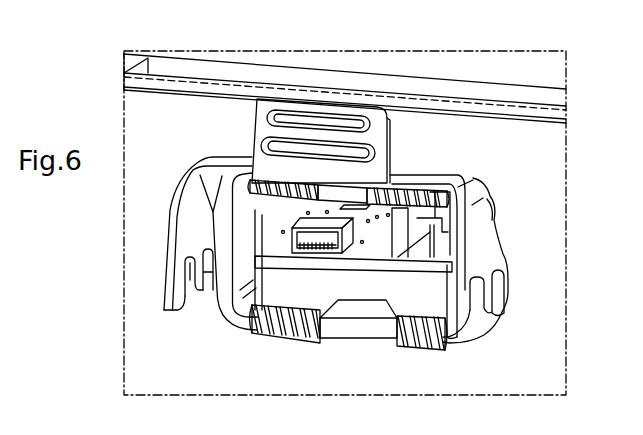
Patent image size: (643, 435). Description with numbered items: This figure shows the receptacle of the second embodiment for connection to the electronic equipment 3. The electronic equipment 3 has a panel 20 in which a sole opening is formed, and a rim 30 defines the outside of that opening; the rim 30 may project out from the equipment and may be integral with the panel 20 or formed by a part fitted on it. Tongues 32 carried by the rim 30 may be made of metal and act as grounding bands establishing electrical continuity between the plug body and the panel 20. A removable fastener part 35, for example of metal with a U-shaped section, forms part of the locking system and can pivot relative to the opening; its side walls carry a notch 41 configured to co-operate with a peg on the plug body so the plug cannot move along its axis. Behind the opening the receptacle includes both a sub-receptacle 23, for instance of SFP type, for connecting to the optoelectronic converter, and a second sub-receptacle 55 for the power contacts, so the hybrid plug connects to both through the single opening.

The electronic equipment 3 is at (493, 93).
The panel 20 is at (442, 137).
The sub-receptacle 23 is at (279, 222).
The rim 30 is at (314, 282).
The tongues 32 is at (262, 330).
The removable fastener part 35 is at (182, 227).
The notch 41 is at (185, 305).
The second sub-receptacle 55 is at (482, 230).